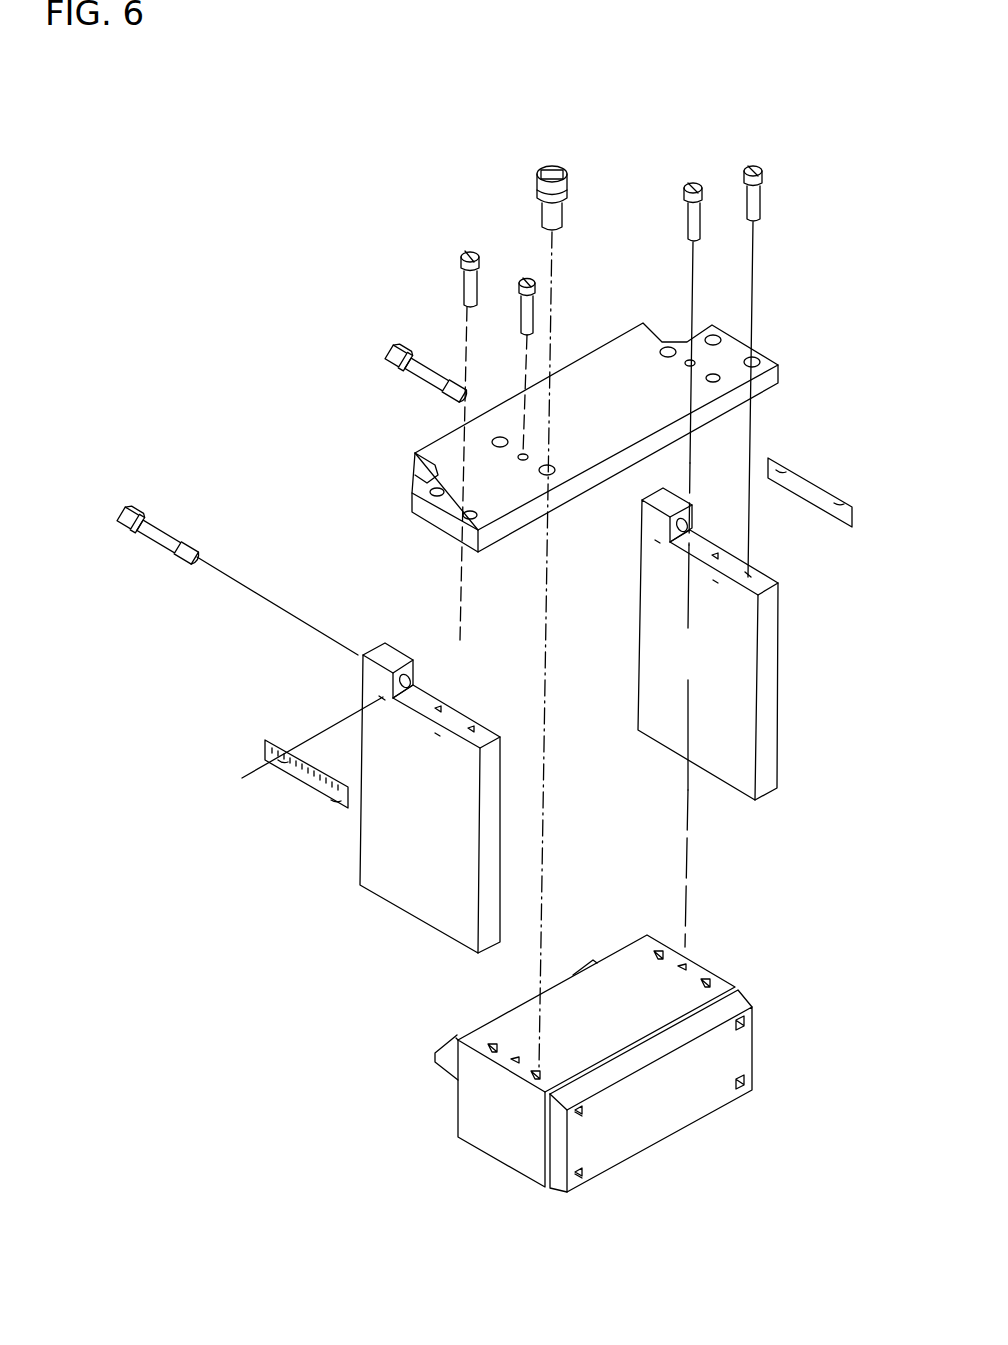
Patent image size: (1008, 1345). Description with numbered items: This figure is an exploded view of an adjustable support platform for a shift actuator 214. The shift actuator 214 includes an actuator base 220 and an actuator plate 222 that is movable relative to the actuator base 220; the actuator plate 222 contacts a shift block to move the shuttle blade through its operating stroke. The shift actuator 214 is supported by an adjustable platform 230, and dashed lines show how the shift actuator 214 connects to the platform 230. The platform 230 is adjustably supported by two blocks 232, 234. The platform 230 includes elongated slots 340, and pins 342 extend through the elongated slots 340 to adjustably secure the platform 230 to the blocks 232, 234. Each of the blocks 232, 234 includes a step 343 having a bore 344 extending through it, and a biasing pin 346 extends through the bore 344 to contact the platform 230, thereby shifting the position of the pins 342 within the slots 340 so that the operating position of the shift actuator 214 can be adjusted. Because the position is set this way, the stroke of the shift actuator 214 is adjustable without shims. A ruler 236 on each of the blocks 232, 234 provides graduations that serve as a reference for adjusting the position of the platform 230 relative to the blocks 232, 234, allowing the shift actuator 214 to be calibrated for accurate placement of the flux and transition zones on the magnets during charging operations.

The shift actuator 214 is at (682, 990).
The actuator base 220 is at (616, 1031).
The actuator plate 222 is at (673, 1113).
The adjustable platform 230 is at (590, 375).
The block 232 is at (440, 858).
The block 234 is at (772, 705).
The ruler 236 is at (305, 775).
The elongated slots 340 is at (465, 514).
The pins 342 is at (458, 272).
The step 343 is at (410, 620).
The bore 344 is at (418, 670).
The biasing pin 346 is at (400, 380).